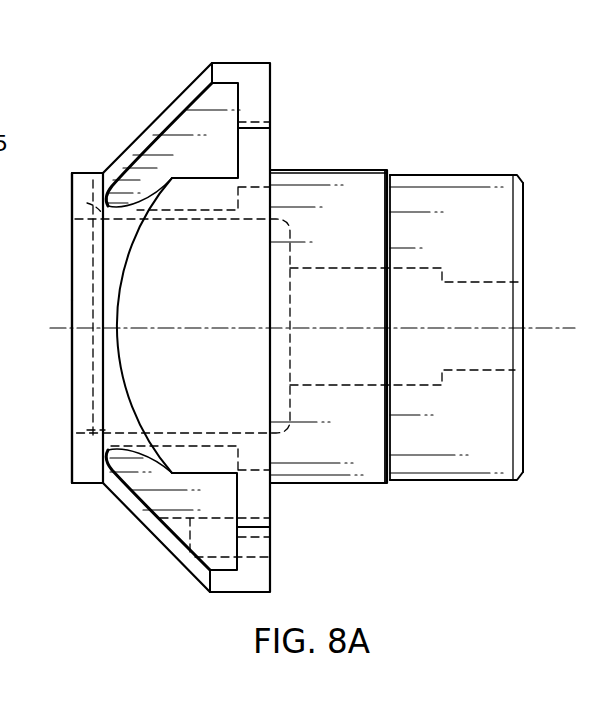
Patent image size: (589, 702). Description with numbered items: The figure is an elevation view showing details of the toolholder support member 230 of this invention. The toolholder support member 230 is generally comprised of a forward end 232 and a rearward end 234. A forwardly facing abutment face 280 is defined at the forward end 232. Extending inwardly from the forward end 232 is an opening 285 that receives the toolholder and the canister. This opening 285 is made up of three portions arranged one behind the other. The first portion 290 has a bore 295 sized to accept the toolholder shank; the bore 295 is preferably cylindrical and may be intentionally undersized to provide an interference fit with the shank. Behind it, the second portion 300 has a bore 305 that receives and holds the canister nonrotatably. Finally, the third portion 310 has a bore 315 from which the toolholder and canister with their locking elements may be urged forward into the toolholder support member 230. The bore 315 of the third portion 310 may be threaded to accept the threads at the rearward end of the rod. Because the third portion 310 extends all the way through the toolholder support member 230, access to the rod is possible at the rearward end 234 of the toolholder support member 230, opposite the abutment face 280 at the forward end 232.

The toolholder support member 230 is at (370, 137).
The forward end 232 is at (72, 302).
The rearward end 234 is at (523, 352).
The forwardly facing abutment face 280 is at (72, 240).
The opening 285 is at (72, 420).
The first portion 290 is at (147, 364).
The bore 295 is at (108, 448).
The second portion 300 is at (319, 268).
The bore 305 is at (356, 268).
The third portion 310 is at (465, 293).
The bore 315 is at (505, 297).